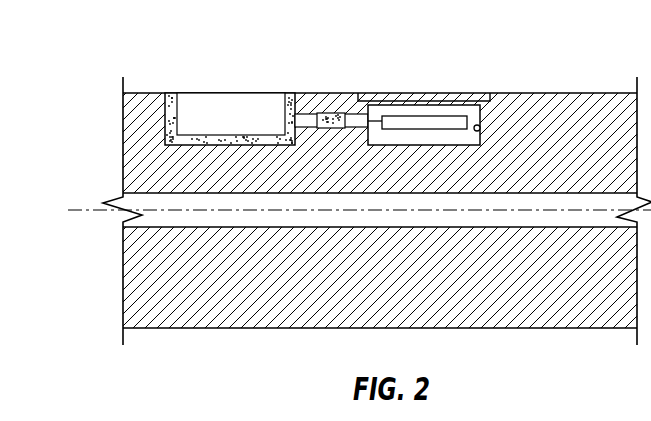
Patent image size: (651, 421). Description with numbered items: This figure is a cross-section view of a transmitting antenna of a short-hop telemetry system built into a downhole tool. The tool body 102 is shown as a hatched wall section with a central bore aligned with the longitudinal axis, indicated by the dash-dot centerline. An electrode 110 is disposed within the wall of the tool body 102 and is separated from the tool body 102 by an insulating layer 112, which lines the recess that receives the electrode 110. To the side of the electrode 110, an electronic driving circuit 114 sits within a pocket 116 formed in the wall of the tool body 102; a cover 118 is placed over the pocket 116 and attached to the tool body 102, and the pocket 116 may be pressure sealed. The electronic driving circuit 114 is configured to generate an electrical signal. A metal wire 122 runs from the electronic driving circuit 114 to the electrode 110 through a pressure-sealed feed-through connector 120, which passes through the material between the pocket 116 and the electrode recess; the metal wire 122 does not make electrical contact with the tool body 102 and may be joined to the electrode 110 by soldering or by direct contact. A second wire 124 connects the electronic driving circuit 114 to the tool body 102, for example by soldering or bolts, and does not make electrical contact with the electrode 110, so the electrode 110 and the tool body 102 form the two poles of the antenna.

The tool body 102 is at (592, 100).
The electrode 110 is at (220, 100).
The insulating layer 112 is at (168, 93).
The electronic driving circuit 114 is at (412, 121).
The pocket 116 is at (480, 130).
The cover 118 is at (460, 97).
The pressure-sealed feed-through connector 120 is at (330, 114).
The metal wire 122 is at (318, 127).
The second wire 124 is at (395, 129).